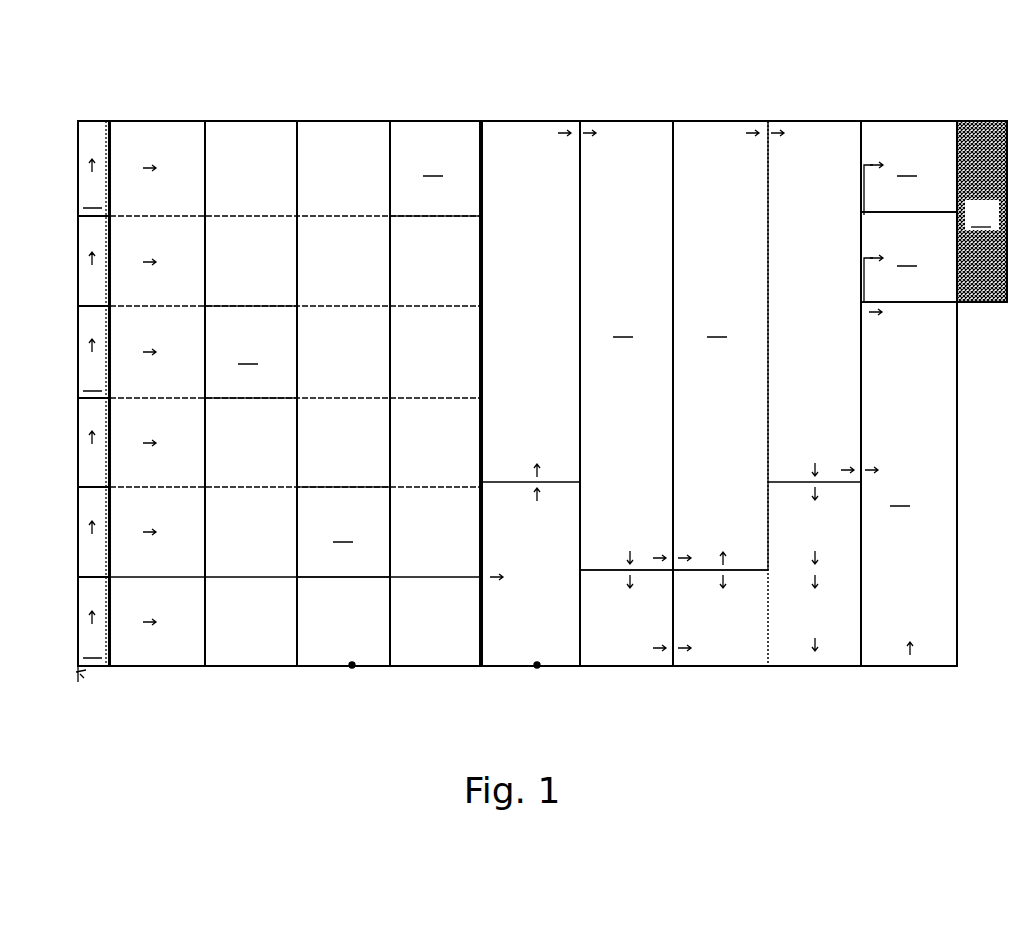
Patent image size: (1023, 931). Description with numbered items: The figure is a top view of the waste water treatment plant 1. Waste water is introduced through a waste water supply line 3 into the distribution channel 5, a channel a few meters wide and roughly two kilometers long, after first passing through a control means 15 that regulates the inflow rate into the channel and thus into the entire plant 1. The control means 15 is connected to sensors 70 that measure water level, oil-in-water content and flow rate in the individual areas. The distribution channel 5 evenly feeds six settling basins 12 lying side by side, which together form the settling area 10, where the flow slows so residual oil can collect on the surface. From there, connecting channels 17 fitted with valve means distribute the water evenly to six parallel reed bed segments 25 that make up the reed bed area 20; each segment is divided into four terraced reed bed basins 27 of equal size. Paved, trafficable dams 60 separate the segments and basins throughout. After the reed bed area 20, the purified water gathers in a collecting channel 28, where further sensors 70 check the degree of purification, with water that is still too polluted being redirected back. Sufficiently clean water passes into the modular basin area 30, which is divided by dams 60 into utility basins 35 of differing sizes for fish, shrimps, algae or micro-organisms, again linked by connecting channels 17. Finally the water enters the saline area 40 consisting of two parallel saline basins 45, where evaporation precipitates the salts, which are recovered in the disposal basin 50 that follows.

The plant 1 is at (582, 74).
The waste water supply line 3 is at (88, 684).
The distribution channel 5 is at (77, 177).
The settling area 10 is at (89, 104).
The settling basins 12 is at (93, 393).
The control means 15 is at (78, 685).
The connecting channels 17 is at (635, 702).
The reed bed area 20 is at (248, 104).
The reed bed segments 25 is at (240, 668).
The reed bed basins 27 is at (343, 349).
The collecting channel 28 is at (480, 121).
The modular basin area 30 is at (722, 98).
The utility basins 35 is at (768, 393).
The saline area 40 is at (905, 107).
The saline basins 45 is at (909, 211).
The disposal basin 50 is at (982, 211).
The dams 60 is at (298, 668).
The sensors 70 is at (352, 665).